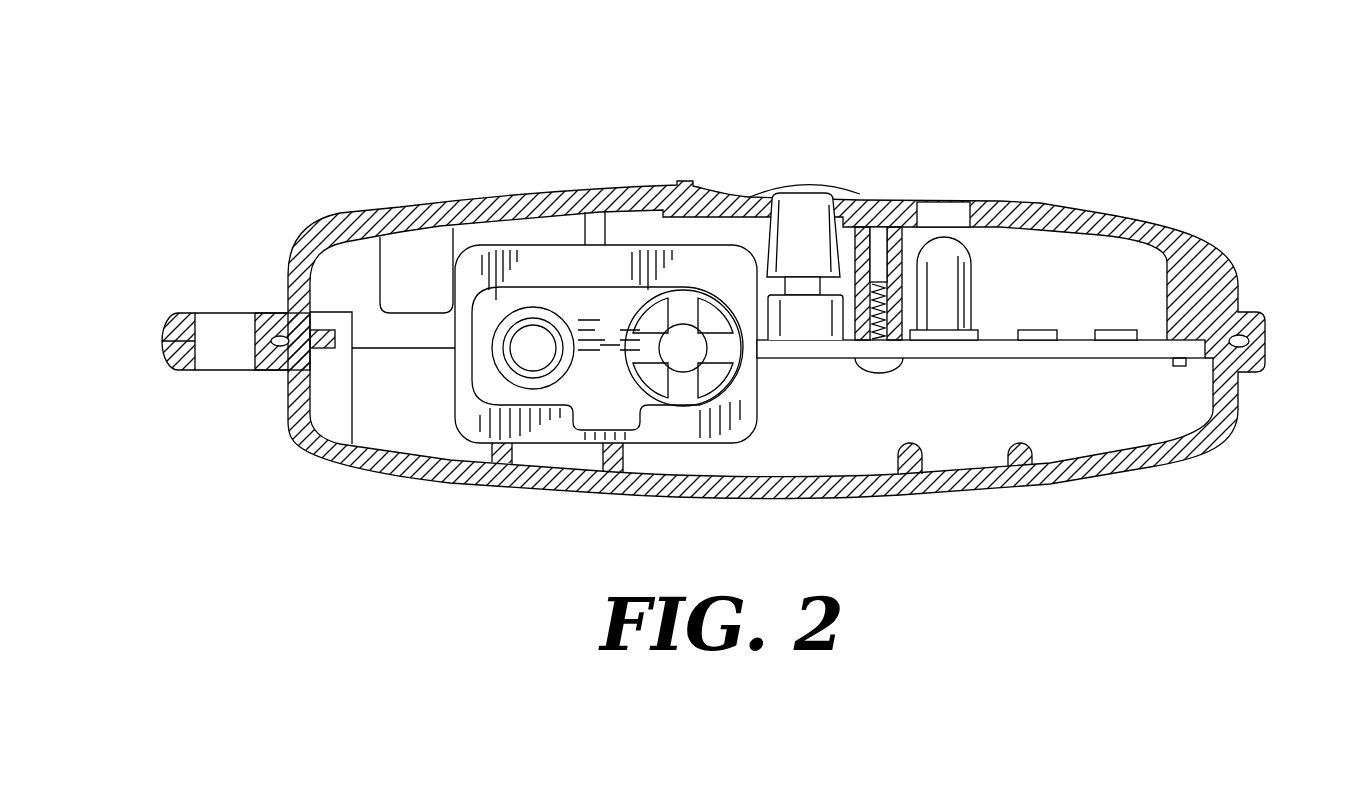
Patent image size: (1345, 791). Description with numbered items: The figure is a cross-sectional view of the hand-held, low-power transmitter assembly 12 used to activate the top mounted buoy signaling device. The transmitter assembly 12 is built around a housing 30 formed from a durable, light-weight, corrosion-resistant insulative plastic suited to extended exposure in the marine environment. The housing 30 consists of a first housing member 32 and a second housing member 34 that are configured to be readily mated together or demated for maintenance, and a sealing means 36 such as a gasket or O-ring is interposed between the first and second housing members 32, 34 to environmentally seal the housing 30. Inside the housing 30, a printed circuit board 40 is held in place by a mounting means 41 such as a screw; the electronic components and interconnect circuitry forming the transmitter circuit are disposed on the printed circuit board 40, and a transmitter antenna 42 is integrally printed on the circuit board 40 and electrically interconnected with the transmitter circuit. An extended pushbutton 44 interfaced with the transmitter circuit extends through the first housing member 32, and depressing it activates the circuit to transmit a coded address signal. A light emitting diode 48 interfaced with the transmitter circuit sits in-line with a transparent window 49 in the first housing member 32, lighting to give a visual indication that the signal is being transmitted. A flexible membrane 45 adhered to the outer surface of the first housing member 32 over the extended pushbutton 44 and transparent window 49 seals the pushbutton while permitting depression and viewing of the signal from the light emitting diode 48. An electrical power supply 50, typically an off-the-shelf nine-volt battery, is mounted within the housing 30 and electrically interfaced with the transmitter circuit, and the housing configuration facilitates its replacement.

The transmitter assembly 12 is at (742, 265).
The housing 30 is at (229, 408).
The first housing member 32 is at (570, 184).
The second housing member 34 is at (297, 450).
The sealing means 36 is at (1268, 340).
The printed circuit board 40 is at (1090, 363).
The mounting means 41 is at (873, 374).
The transmitter antenna 42 is at (1110, 327).
The extended pushbutton 44 is at (803, 212).
The flexible membrane 45 is at (861, 187).
The light emitting diode 48 is at (960, 283).
The transparent window 49 is at (950, 212).
The electrical power supply 50 is at (698, 406).